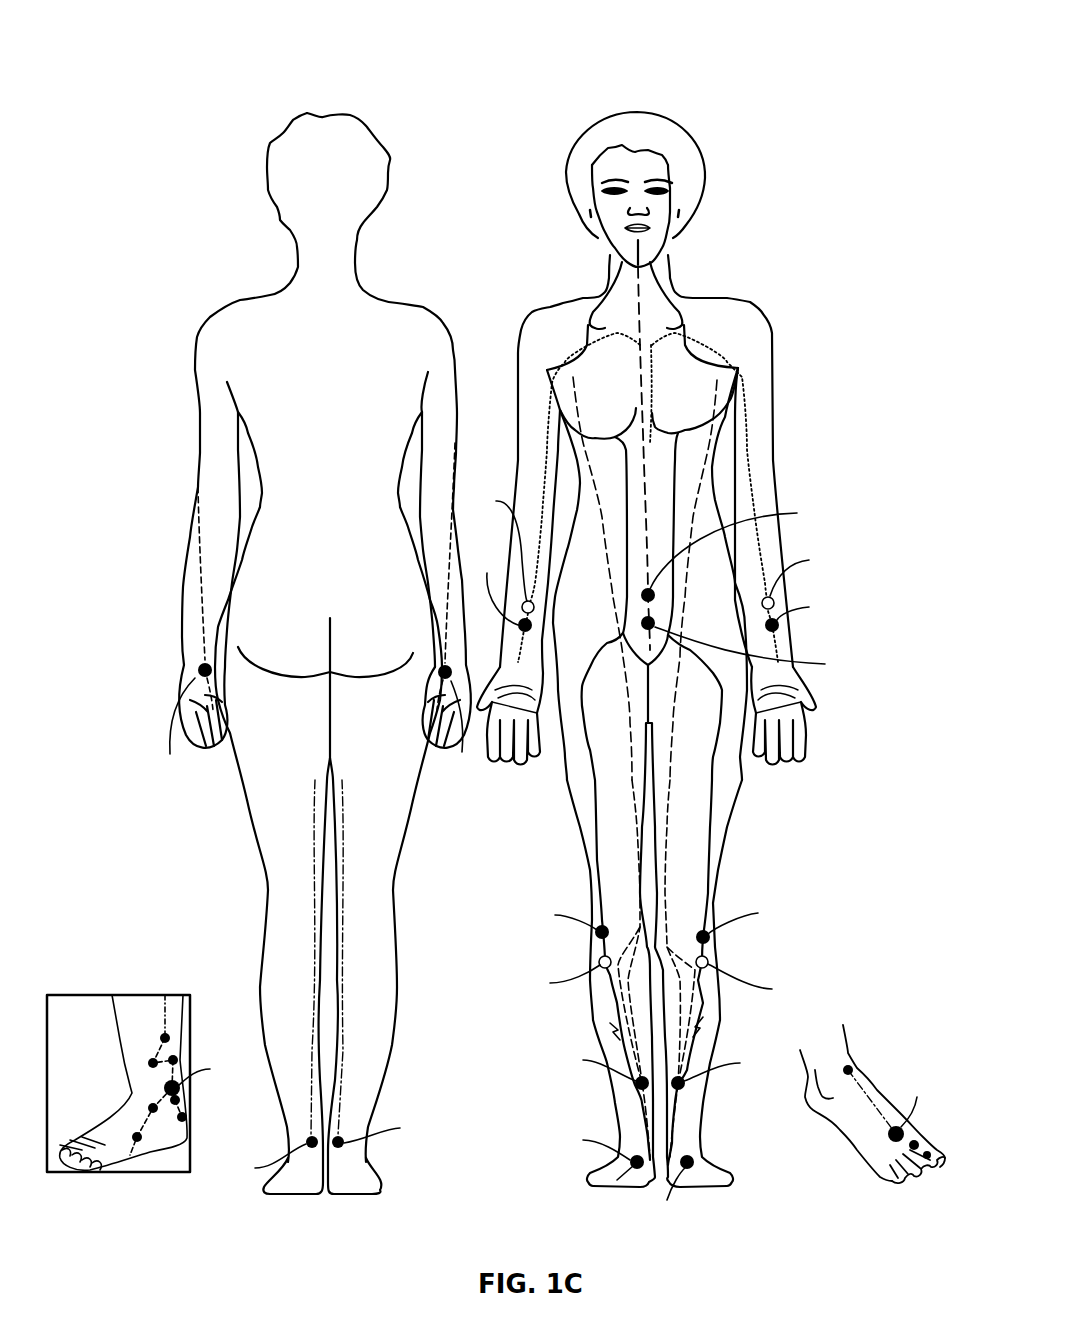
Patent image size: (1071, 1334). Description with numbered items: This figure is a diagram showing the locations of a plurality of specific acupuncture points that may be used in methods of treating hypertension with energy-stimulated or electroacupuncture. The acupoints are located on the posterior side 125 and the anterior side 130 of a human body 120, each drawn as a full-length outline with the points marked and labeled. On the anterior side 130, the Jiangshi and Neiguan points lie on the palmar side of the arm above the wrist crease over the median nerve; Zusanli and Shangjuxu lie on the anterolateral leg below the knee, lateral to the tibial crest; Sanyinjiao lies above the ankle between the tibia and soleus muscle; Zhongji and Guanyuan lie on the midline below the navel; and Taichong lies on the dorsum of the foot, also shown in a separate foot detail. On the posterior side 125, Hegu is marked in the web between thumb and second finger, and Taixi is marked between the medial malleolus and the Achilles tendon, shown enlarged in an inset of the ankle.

The human body 120 is at (118, 32).
The posterior side 125 is at (234, 100).
The anterior side 130 is at (752, 102).